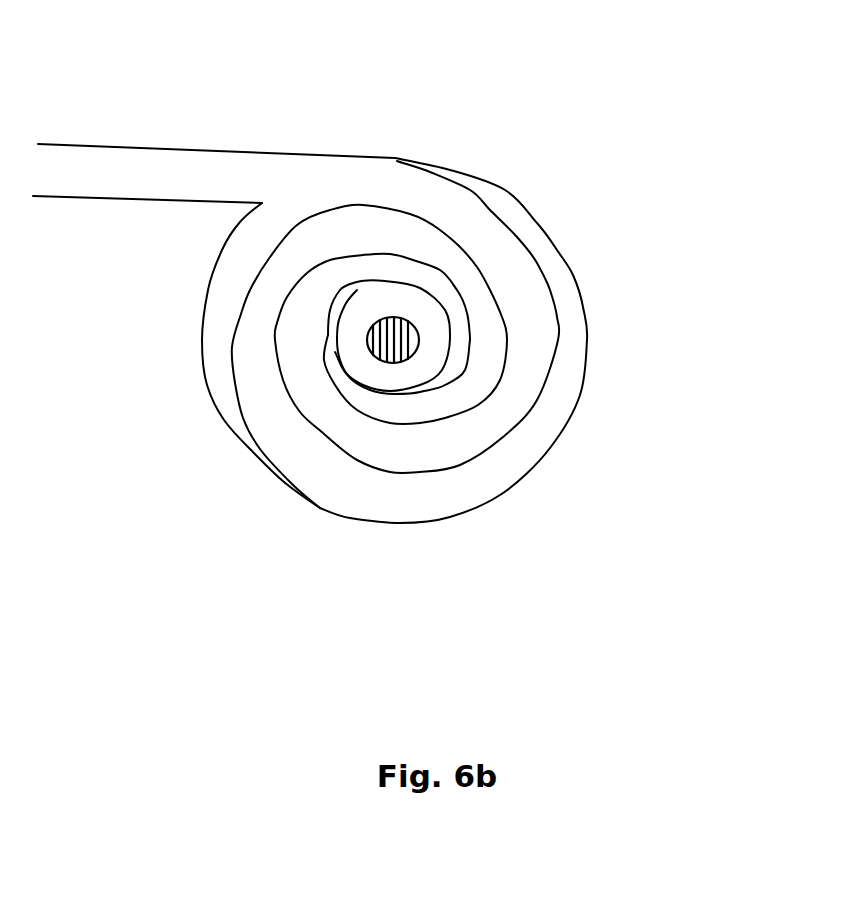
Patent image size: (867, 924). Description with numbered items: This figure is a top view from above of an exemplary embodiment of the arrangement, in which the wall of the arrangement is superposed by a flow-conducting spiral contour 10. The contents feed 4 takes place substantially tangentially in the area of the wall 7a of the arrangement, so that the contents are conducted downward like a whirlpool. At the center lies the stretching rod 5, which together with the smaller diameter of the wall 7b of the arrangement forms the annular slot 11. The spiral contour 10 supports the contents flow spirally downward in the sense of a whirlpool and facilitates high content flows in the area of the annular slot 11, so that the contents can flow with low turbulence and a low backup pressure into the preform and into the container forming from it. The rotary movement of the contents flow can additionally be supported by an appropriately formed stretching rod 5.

The contents feed 4 is at (130, 172).
The stretching rod 5 is at (400, 340).
The wall of the arrangement 7a is at (253, 475).
The wall of the arrangement 7b is at (443, 317).
The flow-conducting spiral contour 10 is at (503, 437).
The annular slot 11 is at (415, 308).